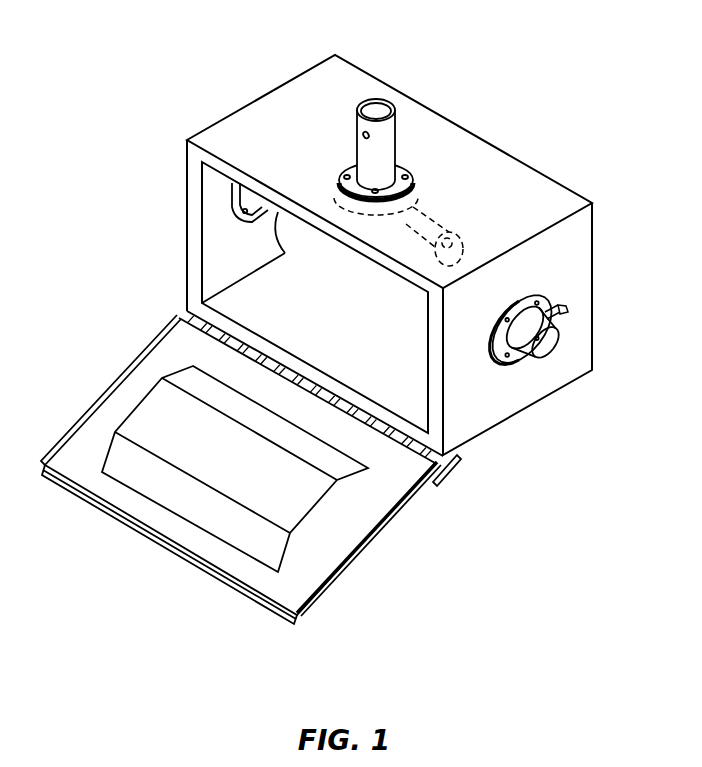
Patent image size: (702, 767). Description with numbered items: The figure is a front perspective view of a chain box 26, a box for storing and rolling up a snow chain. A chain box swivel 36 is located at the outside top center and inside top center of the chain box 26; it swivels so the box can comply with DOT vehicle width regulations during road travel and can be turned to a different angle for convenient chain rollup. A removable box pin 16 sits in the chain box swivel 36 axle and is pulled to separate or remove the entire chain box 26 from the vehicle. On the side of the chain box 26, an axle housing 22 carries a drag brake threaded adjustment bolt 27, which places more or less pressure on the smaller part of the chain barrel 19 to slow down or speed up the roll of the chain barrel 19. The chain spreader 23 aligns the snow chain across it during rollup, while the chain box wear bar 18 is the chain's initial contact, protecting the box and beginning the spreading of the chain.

The removable box pin 16 is at (367, 137).
The chain box wear bar 18 is at (297, 618).
The chain barrel 19 is at (288, 238).
The axle housing 22 is at (507, 357).
The chain spreader 23 is at (330, 498).
The chain box 26 is at (253, 125).
The drag brake threaded adjustment bolt 27 is at (565, 310).
The chain box swivel 36 is at (420, 178).